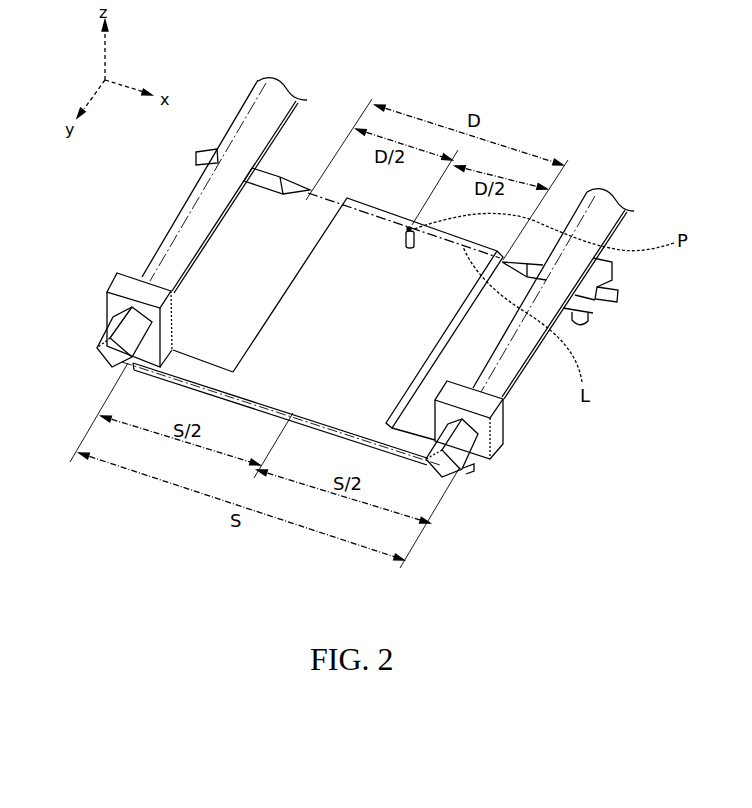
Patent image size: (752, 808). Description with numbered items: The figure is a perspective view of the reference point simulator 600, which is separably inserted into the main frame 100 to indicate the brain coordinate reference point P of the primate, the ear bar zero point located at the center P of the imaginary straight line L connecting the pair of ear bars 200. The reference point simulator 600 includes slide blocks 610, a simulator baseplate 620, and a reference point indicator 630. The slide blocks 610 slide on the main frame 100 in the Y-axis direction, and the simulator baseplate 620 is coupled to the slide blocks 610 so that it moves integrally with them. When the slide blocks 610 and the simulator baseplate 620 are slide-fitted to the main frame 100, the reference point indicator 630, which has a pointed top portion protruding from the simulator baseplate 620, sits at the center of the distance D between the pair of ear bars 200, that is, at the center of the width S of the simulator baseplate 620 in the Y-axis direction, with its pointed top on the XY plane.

The main frame 100 is at (248, 122).
The ear bars 200 is at (281, 172).
The reference point simulator 600 is at (394, 470).
The slide blocks 610 is at (116, 280).
The simulator baseplate 620 is at (200, 377).
The reference point indicator 630 is at (411, 234).